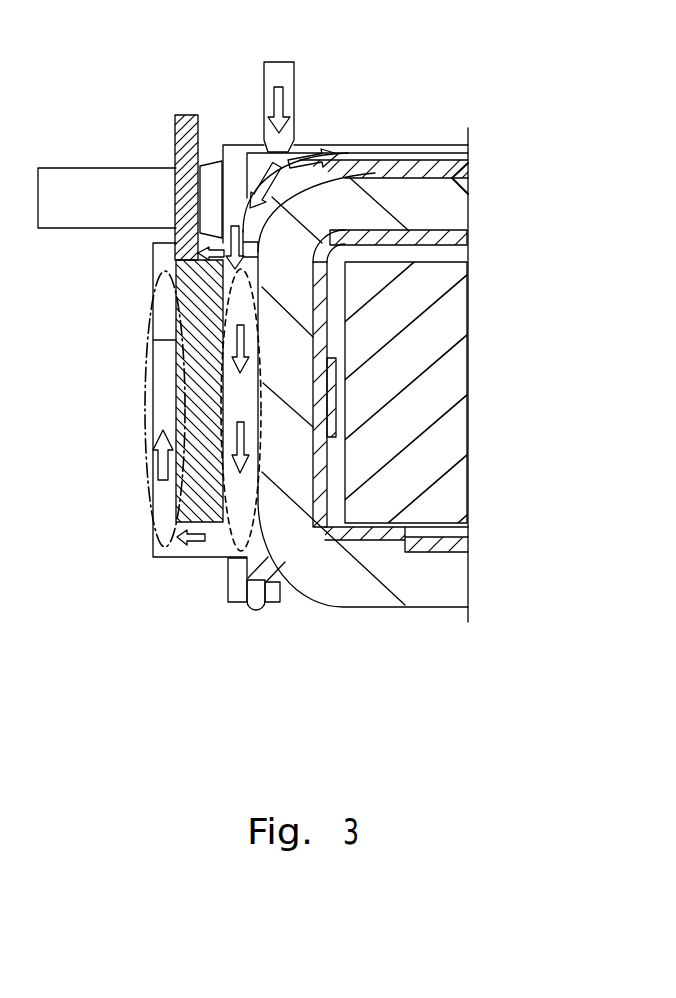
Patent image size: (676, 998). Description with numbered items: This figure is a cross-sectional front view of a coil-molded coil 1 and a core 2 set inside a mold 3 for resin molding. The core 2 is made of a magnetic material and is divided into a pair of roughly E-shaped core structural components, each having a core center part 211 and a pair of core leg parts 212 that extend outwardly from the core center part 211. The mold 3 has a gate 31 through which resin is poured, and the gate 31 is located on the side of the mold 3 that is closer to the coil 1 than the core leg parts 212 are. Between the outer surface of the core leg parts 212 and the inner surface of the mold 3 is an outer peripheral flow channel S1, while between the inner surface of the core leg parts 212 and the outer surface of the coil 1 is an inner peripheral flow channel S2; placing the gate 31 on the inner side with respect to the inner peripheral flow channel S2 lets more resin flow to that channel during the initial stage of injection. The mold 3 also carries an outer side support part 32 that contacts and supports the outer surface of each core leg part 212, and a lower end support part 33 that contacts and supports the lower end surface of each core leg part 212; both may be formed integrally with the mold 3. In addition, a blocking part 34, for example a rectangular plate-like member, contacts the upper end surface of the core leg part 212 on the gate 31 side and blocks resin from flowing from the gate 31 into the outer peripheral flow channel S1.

The coil 1 is at (457, 208).
The core 2 is at (457, 295).
The mold 3 is at (238, 96).
The gate 31 is at (288, 143).
The outer side support part 32 is at (167, 380).
The lower end support part 33 is at (194, 554).
The blocking part 34 is at (188, 130).
The core center part 211 is at (460, 357).
The core leg parts 212 is at (192, 302).
The outer peripheral flow channel S1 is at (138, 415).
The inner peripheral flow channel S2 is at (238, 536).